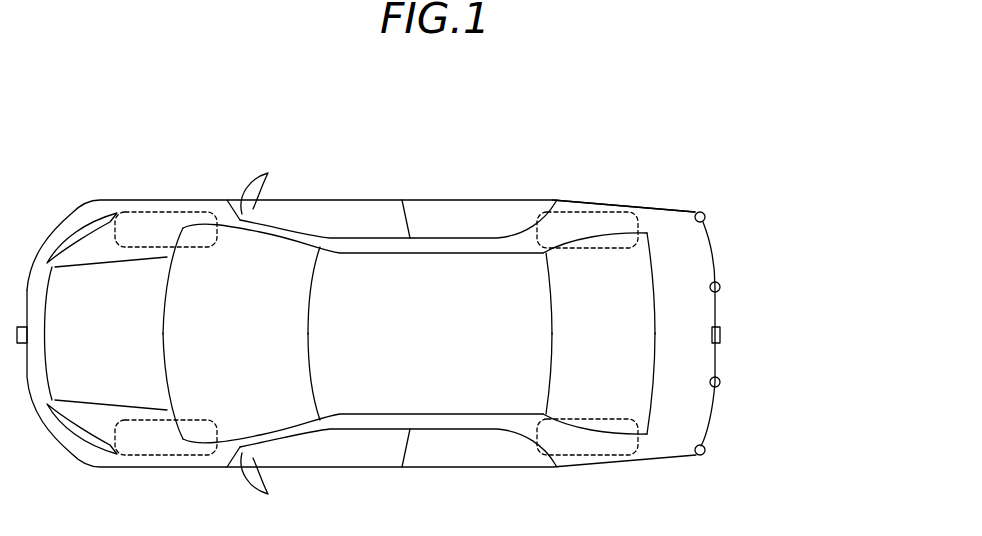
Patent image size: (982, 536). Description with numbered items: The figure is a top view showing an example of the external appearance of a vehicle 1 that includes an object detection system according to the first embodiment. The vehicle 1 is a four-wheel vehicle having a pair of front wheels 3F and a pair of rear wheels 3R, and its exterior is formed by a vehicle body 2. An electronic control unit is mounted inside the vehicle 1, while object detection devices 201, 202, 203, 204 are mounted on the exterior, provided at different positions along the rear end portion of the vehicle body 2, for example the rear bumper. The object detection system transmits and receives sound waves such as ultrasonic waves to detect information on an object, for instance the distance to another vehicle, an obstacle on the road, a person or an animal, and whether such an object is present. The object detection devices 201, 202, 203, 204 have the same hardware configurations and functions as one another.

The vehicle 1 is at (519, 140).
The vehicle body 2 is at (662, 209).
The front wheels 3F is at (172, 212).
The rear wheels 3R is at (592, 212).
The object detection device 201 is at (705, 451).
The object detection device 202 is at (720, 383).
The object detection device 203 is at (720, 287).
The object detection device 204 is at (704, 212).